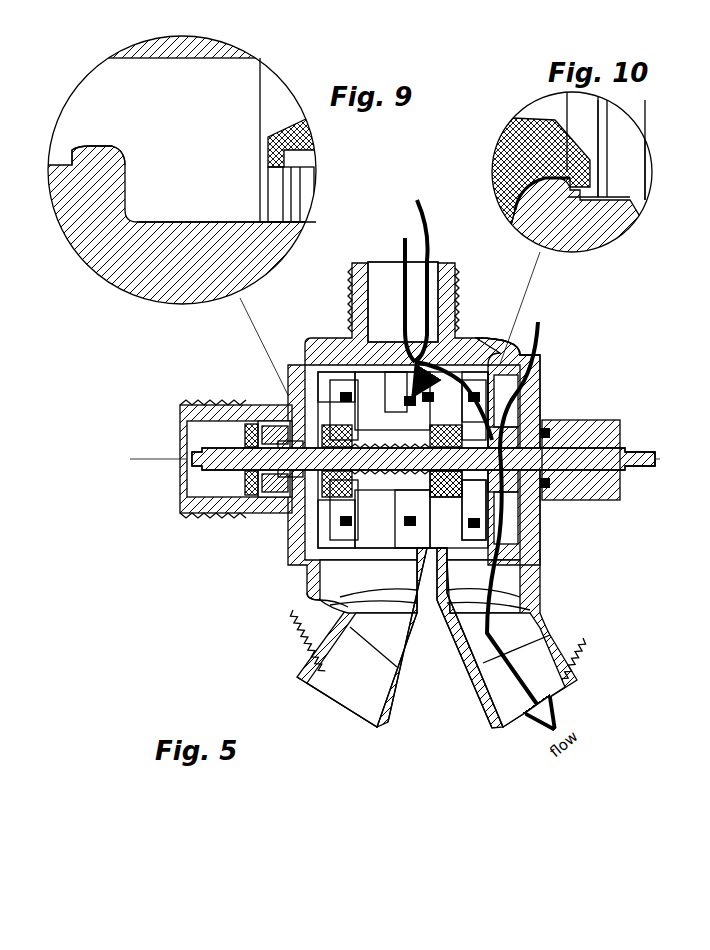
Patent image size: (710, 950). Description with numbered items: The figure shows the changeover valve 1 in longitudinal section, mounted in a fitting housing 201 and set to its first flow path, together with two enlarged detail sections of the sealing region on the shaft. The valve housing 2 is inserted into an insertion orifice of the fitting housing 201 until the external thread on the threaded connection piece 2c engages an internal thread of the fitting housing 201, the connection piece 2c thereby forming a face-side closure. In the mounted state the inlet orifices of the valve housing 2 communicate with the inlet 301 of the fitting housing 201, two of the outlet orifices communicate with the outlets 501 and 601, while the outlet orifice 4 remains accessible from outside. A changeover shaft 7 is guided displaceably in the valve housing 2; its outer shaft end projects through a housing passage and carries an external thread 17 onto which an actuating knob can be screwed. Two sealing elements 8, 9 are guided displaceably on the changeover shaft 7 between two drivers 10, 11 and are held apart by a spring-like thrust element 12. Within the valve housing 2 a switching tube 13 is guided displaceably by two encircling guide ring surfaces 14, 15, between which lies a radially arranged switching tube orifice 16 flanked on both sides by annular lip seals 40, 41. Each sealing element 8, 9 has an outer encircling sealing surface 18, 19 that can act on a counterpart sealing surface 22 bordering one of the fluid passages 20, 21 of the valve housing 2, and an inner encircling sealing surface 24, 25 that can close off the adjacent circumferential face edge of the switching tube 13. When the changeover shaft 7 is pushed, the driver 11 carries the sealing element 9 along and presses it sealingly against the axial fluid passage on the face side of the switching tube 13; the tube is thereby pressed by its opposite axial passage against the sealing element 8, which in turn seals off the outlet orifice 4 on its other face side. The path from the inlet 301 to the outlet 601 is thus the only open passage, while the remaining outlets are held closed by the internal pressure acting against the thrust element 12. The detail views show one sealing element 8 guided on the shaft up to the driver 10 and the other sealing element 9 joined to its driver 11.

In FIG. 5, the changeover valve 1 is at (448, 305).
In FIG. 5, the valve housing 2 is at (292, 532).
In FIG. 5, the threaded connection piece 2c is at (195, 510).
In FIG. 5, the outlet orifice 4 is at (195, 437).
In FIG. 9, the changeover shaft 7 is at (198, 240).
In FIG. 5, the changeover shaft 7 is at (592, 455).
In FIG. 9, the sealing element 8 is at (300, 146).
In FIG. 10, the sealing element 9 is at (532, 142).
In FIG. 5, the sealing element 9 is at (472, 500).
In FIG. 9, the driver 10 is at (108, 176).
In FIG. 10, the driver 10 is at (676, 150).
In FIG. 5, the driver 10 is at (282, 505).
In FIG. 10, the driver 11 is at (585, 215).
In FIG. 5, the driver 11 is at (494, 473).
In FIG. 5, the thrust element 12 is at (366, 386).
In FIG. 5, the switching tube 13 is at (482, 385).
In FIG. 5, the guide ring surface 14 is at (346, 406).
In FIG. 5, the guide ring surface 15 is at (433, 570).
In FIG. 5, the switching tube orifice 16 is at (322, 600).
In FIG. 5, the external thread 17 is at (650, 442).
In FIG. 9, the encircling sealing surface 18 is at (283, 122).
In FIG. 5, the encircling sealing surface 18 is at (314, 414).
In FIG. 10, the encircling sealing surface 19 is at (555, 130).
In FIG. 5, the encircling sealing surface 19 is at (506, 382).
In FIG. 9, the fluid passage 20 is at (246, 85).
In FIG. 5, the fluid passage 20 is at (200, 462).
In FIG. 5, the fluid passage 21 is at (545, 425).
In FIG. 5, the counterpart sealing surface 22 is at (305, 540).
In FIG. 5, the inner encircling sealing surface 24 is at (318, 412).
In FIG. 5, the inner encircling sealing surface 25 is at (412, 512).
In FIG. 5, the lip seal 40 is at (342, 352).
In FIG. 5, the lip seal 41 is at (395, 365).
In FIG. 5, the fitting housing 201 is at (548, 365).
In FIG. 5, the inlet 301 is at (380, 272).
In FIG. 5, the outlet 501 is at (328, 700).
In FIG. 5, the outlet 601 is at (565, 690).